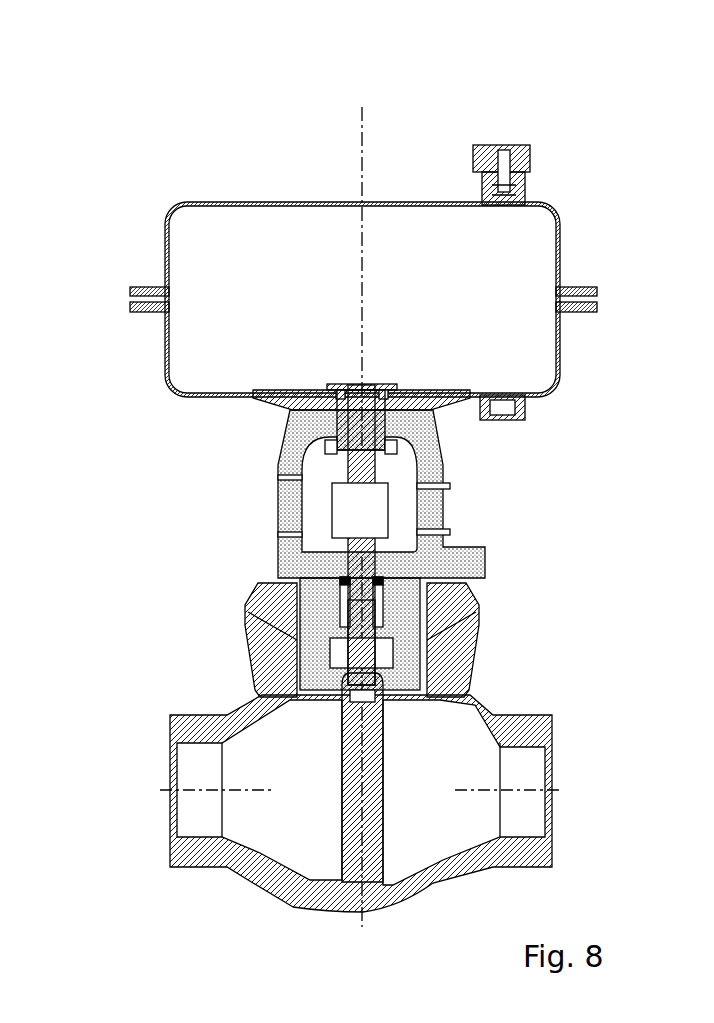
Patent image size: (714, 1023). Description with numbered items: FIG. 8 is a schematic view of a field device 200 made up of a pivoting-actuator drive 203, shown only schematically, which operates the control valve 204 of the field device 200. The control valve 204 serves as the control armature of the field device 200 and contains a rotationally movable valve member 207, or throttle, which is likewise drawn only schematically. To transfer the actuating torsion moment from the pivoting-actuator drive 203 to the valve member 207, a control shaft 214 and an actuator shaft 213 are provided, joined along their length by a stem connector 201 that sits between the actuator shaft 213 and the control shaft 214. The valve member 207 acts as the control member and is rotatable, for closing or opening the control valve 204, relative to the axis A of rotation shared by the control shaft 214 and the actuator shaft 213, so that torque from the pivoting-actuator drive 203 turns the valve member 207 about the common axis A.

The field device 200 is at (197, 152).
The stem connector 201 is at (345, 503).
The pivoting-actuator drive 203 is at (299, 200).
The control valve 204 is at (228, 676).
The valve member 207 is at (339, 733).
The actuator shaft 213 is at (381, 466).
The control shaft 214 is at (381, 653).
The axis of rotation A is at (362, 133).